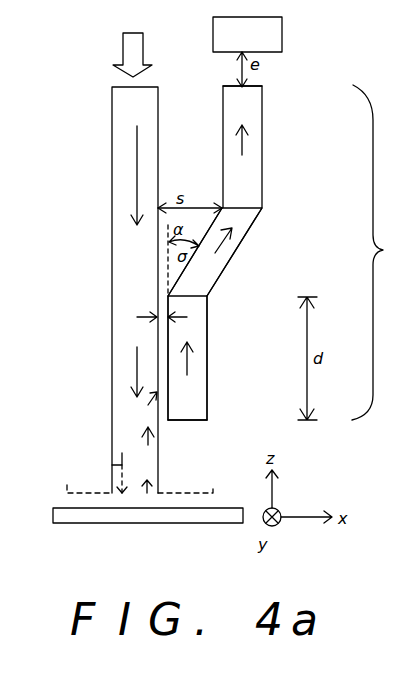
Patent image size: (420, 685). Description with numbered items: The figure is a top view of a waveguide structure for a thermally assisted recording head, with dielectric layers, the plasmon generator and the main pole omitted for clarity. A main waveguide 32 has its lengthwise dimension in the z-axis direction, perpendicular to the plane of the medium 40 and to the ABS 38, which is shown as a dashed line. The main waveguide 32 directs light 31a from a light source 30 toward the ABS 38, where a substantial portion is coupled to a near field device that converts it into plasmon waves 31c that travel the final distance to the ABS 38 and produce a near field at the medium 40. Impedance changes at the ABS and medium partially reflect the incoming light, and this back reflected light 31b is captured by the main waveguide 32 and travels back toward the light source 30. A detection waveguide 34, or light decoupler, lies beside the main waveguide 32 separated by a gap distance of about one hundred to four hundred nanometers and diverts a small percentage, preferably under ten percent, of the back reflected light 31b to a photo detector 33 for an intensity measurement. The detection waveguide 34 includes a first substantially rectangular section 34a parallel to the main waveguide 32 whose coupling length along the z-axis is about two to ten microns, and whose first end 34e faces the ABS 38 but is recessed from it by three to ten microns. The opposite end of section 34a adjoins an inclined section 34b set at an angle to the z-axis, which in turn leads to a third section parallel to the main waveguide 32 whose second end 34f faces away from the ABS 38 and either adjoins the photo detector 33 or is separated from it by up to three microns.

The light source 30 is at (122, 56).
The light 31a is at (137, 165).
The back reflected light 31b is at (242, 147).
The plasmon waves 31c is at (118, 465).
The main waveguide 32 is at (122, 270).
The photo detector 33 is at (268, 32).
The detection waveguide 34 is at (286, 252).
The first substantially rectangular section 34a is at (193, 305).
The second section 34b is at (215, 268).
The first end 34e is at (193, 420).
The second end 34f is at (253, 86).
The ABS 38 is at (142, 477).
The medium 40 is at (73, 515).